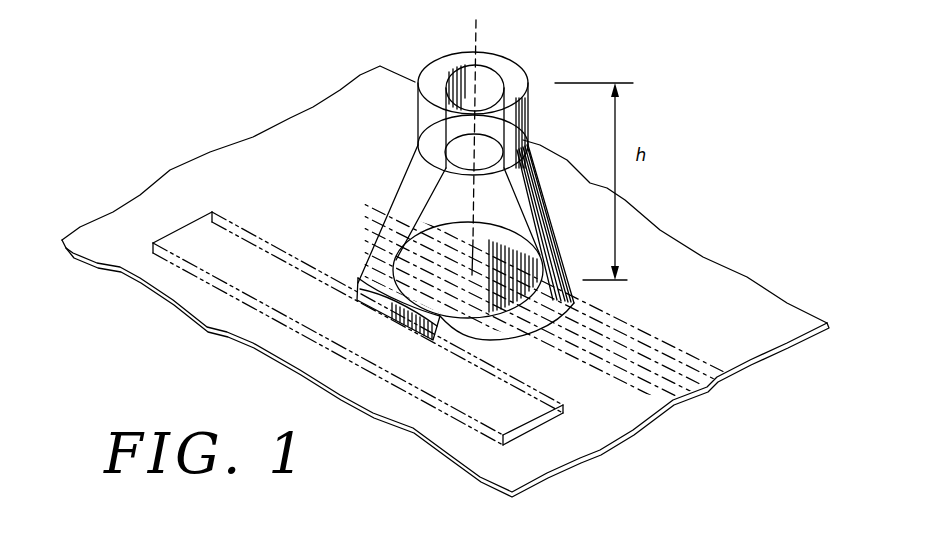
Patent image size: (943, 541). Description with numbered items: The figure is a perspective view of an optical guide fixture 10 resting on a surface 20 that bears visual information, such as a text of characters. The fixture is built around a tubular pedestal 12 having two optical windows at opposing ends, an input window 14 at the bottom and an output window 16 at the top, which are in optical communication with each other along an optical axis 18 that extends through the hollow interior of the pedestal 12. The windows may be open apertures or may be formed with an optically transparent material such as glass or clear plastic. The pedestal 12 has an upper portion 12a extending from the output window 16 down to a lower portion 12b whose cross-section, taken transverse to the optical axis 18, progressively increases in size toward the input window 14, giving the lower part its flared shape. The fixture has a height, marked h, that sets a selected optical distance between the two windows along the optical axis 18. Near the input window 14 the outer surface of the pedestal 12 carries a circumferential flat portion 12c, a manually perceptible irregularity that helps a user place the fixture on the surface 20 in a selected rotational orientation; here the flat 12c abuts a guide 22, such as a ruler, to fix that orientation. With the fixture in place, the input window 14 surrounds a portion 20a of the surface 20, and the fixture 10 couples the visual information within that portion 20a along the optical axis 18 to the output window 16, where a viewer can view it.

The optical guide fixture 10 is at (444, 176).
The pedestal 12 is at (400, 177).
The upper portion 12a is at (418, 130).
The lower portion 12b is at (378, 227).
The circumferential flat portion 12c is at (370, 300).
The input window 14 is at (548, 240).
The output window 16 is at (487, 80).
The optical axis 18 is at (473, 212).
The surface 20 is at (267, 148).
The portion of the surface 20a is at (585, 295).
The guide 22 is at (530, 392).